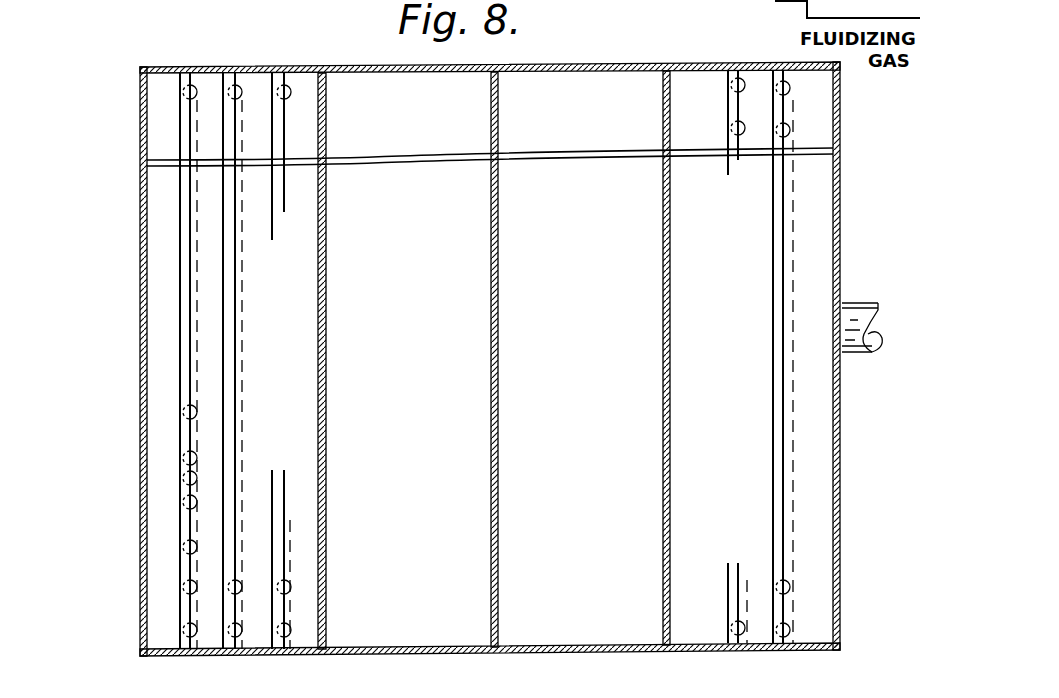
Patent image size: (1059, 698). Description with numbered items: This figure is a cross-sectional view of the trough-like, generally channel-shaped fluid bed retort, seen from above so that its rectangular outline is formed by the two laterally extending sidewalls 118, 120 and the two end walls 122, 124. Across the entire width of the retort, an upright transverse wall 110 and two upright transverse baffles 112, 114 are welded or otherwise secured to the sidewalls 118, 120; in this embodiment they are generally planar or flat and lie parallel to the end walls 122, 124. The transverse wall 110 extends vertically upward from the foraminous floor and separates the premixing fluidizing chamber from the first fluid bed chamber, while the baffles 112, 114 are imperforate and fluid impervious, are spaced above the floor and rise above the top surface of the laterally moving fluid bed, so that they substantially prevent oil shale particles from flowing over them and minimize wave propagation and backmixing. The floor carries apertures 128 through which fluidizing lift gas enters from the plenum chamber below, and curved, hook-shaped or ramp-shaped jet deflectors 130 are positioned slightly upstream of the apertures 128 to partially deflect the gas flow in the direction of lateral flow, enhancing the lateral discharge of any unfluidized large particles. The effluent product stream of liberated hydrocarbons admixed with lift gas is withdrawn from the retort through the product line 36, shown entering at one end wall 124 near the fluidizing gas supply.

The product line 36 is at (862, 305).
The upright transverse wall 110 is at (326, 337).
The transverse baffle 112 is at (499, 373).
The transverse baffle 114 is at (672, 421).
The sidewall 118 is at (228, 68).
The sidewall 120 is at (367, 656).
The end wall 122 is at (140, 327).
The end wall 124 is at (840, 198).
The apertures 128 is at (190, 478).
The jet deflectors 130 is at (190, 231).